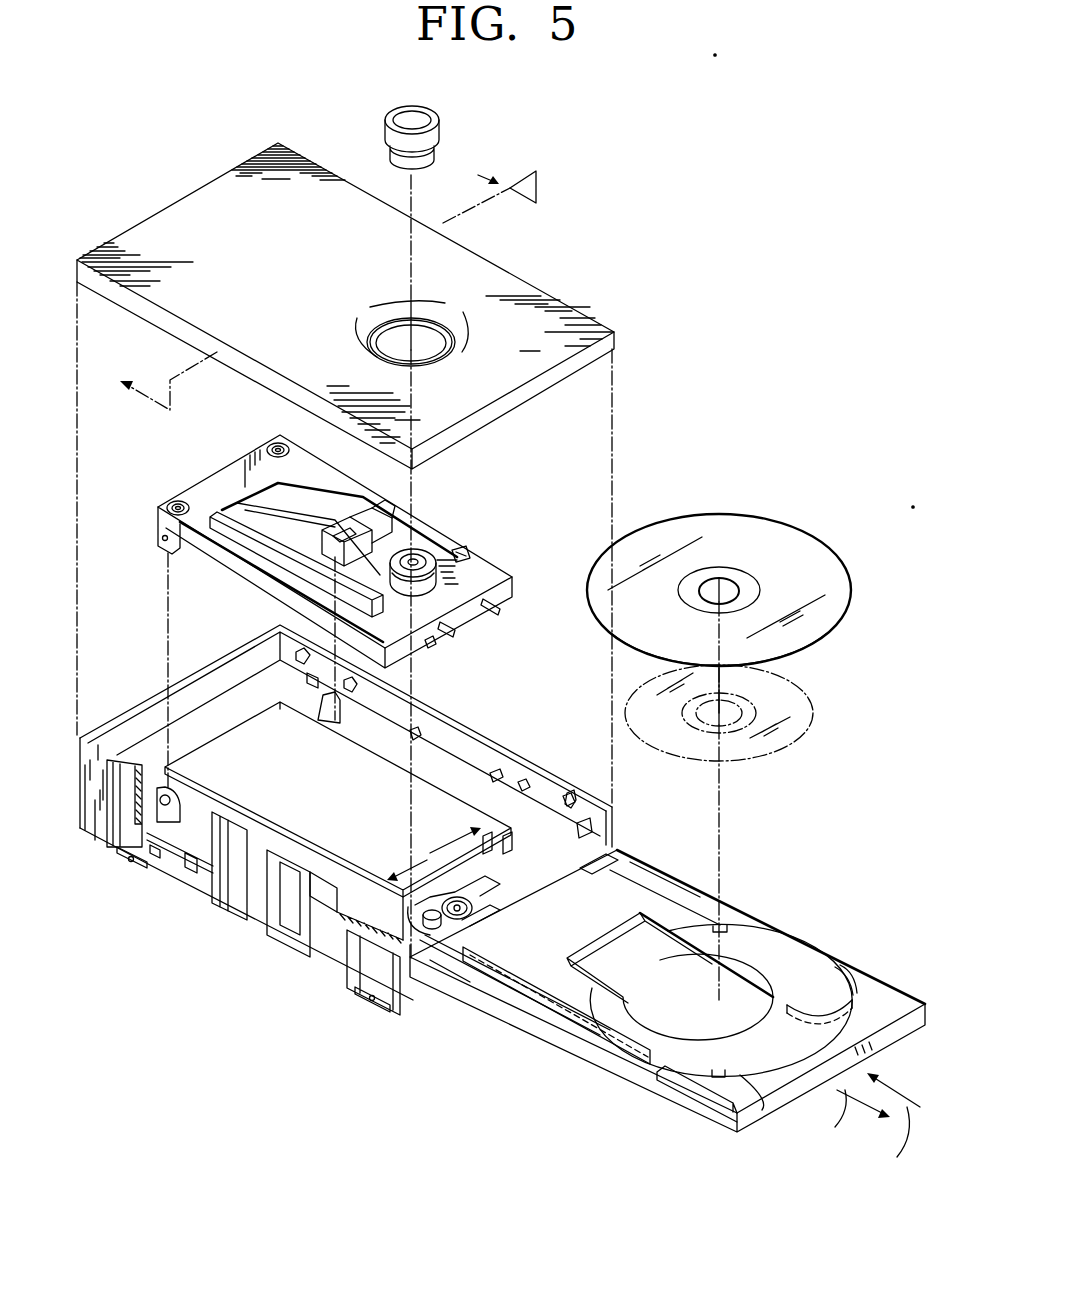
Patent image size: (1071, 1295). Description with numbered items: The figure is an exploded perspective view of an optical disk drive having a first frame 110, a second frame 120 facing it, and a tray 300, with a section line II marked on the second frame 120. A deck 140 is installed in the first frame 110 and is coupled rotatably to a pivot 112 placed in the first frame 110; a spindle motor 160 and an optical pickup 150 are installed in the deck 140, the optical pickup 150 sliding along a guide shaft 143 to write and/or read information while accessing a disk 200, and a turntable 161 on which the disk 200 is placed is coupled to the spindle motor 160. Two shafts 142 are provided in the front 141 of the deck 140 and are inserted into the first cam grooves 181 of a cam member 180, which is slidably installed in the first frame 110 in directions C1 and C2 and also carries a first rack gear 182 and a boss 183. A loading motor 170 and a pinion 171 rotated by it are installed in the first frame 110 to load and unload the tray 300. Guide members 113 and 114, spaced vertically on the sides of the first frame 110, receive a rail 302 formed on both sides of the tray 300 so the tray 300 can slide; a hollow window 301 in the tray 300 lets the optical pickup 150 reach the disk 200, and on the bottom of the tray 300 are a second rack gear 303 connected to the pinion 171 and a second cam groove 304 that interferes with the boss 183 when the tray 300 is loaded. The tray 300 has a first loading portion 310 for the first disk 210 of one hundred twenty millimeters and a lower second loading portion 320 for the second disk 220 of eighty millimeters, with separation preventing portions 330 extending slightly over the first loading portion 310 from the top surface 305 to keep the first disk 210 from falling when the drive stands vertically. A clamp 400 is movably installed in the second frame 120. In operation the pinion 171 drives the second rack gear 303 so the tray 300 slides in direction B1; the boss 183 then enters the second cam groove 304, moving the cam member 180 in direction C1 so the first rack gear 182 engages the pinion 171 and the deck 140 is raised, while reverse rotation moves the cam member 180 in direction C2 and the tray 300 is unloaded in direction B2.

The first frame 110 is at (228, 893).
The pivot 112 is at (160, 823).
The guide member 113 is at (583, 822).
The guide member 114 is at (568, 795).
The second frame 120 is at (515, 297).
The deck 140 is at (215, 483).
The front of the deck 141 is at (427, 643).
The shafts 142 is at (458, 636).
The guide shaft 143 is at (300, 537).
The optical pickup 150 is at (383, 520).
The spindle motor 160 is at (320, 595).
The turntable 161 is at (303, 567).
The loading motor 170 is at (518, 892).
The pinion 171 is at (393, 925).
The cam member 180 is at (507, 836).
The first cam grooves 181 is at (593, 864).
The first rack gear 182 is at (360, 905).
The boss 183 is at (487, 834).
The disk 200 is at (761, 637).
The first disk 210 is at (817, 630).
The second disk 220 is at (748, 713).
The tray 300 is at (793, 923).
The hollow window 301 is at (533, 977).
The rail 302 is at (677, 1097).
The second rack gear 303 is at (630, 1042).
The second cam groove 304 is at (810, 1007).
The top surface of the tray 305 is at (868, 997).
The first loading portion 310 is at (765, 945).
The second loading portion 320 is at (748, 967).
The separation preventing portion 330 is at (762, 1100).
The clamp 400 is at (375, 128).
The direction B1 is at (893, 1126).
The direction B2 is at (854, 1121).
The direction C1 is at (455, 832).
The direction C2 is at (401, 863).
The section line II- II is at (314, 280).